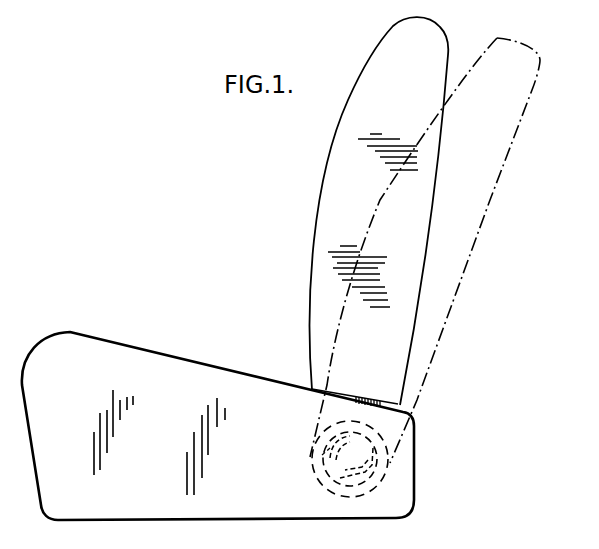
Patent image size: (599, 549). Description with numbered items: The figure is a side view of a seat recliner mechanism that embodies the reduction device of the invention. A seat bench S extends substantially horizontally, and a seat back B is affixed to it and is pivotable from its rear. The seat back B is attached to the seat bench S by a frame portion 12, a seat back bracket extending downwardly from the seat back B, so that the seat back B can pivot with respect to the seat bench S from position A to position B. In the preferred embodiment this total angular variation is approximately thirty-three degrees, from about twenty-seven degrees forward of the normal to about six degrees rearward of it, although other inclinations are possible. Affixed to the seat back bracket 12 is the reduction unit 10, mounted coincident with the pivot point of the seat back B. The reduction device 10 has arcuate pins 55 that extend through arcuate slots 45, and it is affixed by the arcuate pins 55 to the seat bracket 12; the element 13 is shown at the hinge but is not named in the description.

The reduction unit 10 is at (392, 455).
The frame portion 12 is at (323, 413).
The upper arm fixed to seat back 13 is at (327, 459).
The arcuate slots 45 is at (378, 460).
The arcuate pins 55 is at (323, 455).
The seat bench S is at (418, 485).
The position A is at (497, 38).
The seat back B is at (541, 56).